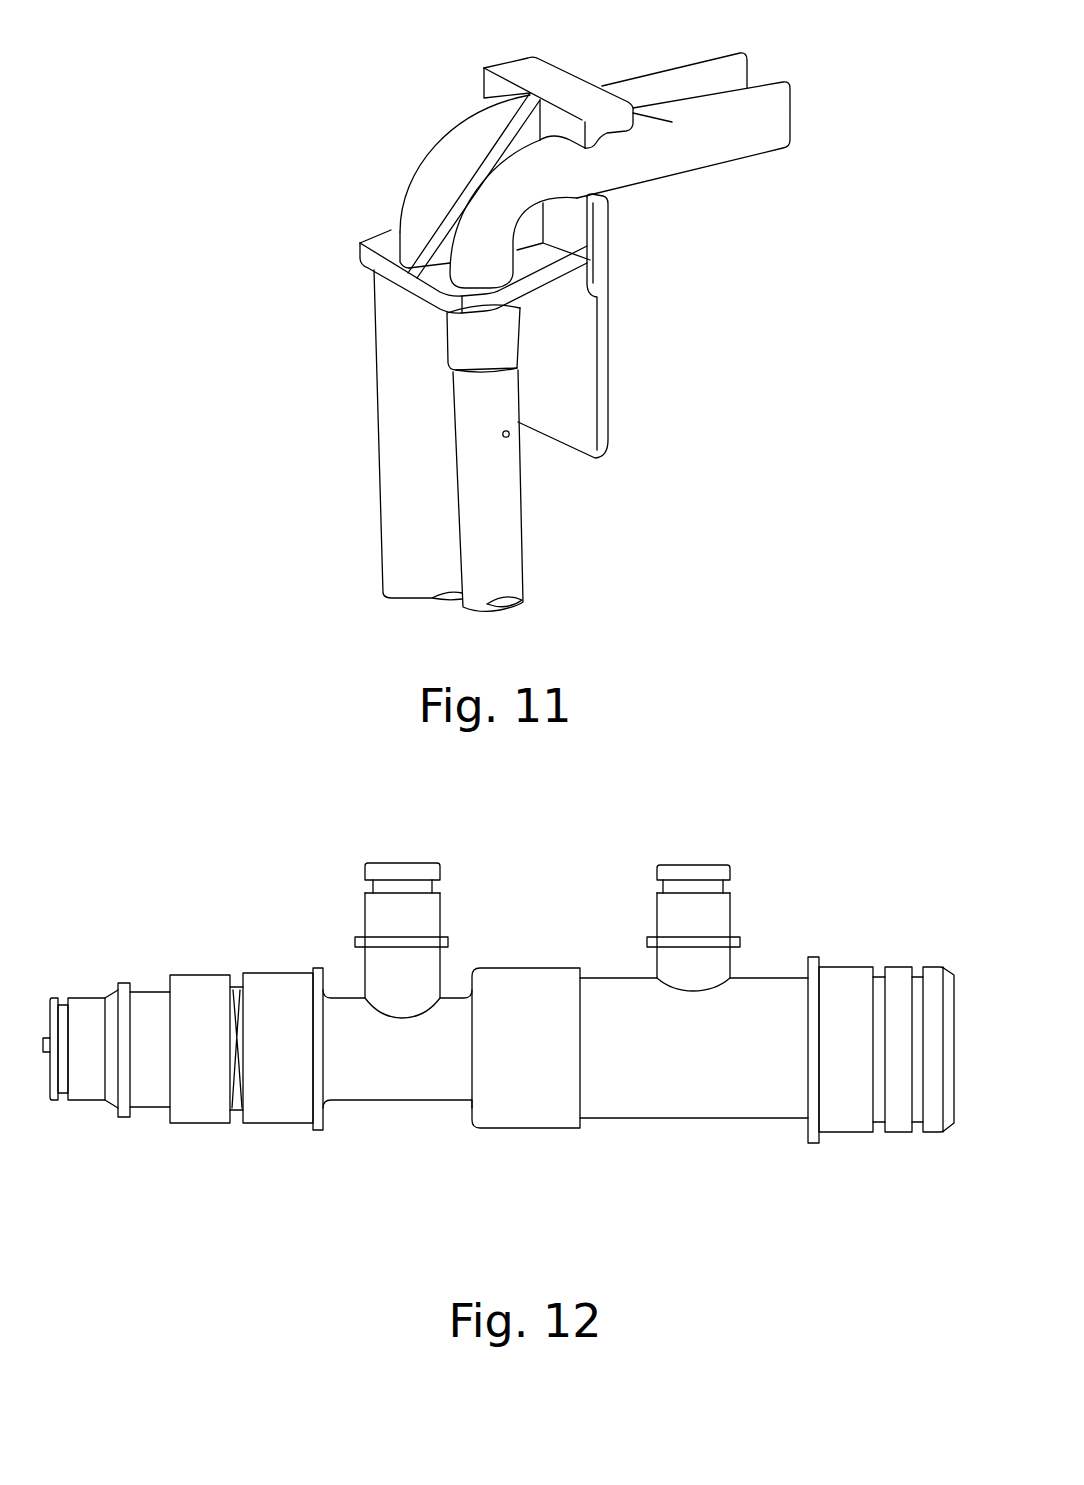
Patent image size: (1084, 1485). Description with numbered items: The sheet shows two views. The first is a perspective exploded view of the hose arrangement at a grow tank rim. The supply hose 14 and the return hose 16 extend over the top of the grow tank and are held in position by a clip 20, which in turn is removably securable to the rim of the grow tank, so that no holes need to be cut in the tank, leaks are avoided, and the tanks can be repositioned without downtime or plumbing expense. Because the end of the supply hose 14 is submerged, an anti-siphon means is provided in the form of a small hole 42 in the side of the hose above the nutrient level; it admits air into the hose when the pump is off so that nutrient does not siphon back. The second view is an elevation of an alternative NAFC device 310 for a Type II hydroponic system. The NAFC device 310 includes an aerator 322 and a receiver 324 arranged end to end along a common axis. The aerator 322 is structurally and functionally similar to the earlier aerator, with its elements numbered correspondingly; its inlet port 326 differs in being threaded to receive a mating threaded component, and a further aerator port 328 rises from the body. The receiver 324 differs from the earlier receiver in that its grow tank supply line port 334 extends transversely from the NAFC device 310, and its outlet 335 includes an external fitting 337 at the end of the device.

In FIG. 11, the supply hose 14 is at (502, 540).
In FIG. 11, the return hose 16 is at (407, 482).
In FIG. 11, the clip 20 is at (625, 379).
In FIG. 11, the small hole 42 is at (509, 438).
In FIG. 12, the NAFC device 310 is at (500, 990).
In FIG. 12, the aerator 322 is at (311, 1046).
In FIG. 12, the receiver 324 is at (765, 1047).
In FIG. 12, the inlet port 326 is at (280, 990).
In FIG. 12, the aerator port 328 is at (422, 915).
In FIG. 12, the grow tank supply line port 334 is at (720, 915).
In FIG. 12, the outlet 335 is at (898, 990).
In FIG. 12, the external fitting 337 is at (844, 983).